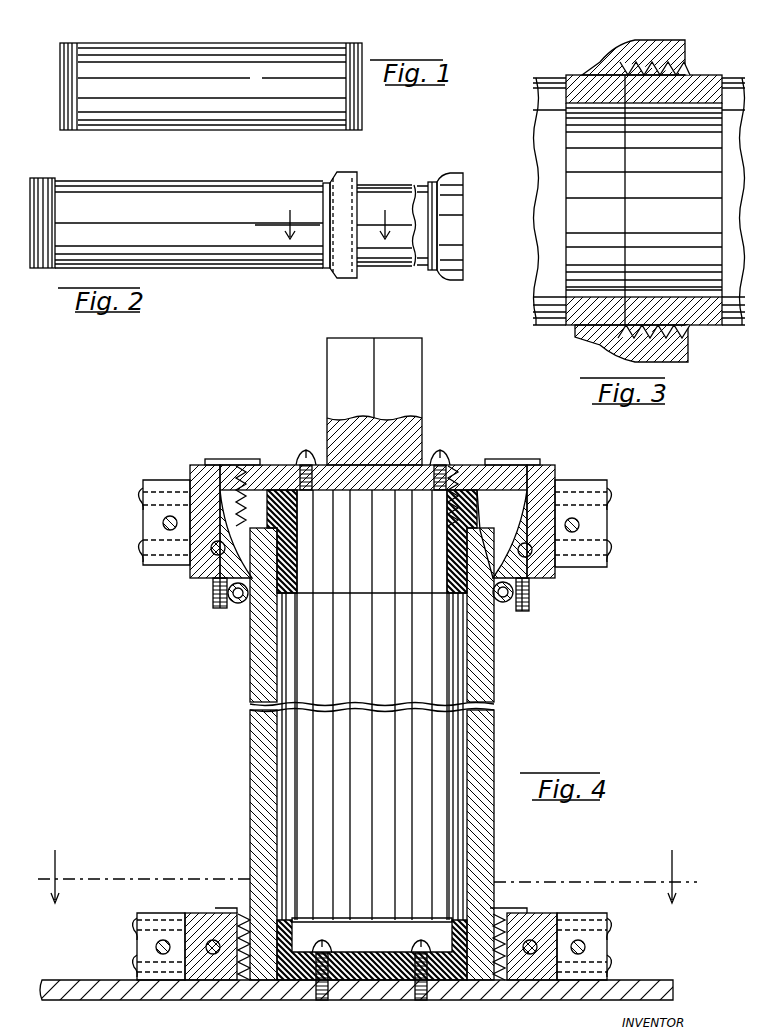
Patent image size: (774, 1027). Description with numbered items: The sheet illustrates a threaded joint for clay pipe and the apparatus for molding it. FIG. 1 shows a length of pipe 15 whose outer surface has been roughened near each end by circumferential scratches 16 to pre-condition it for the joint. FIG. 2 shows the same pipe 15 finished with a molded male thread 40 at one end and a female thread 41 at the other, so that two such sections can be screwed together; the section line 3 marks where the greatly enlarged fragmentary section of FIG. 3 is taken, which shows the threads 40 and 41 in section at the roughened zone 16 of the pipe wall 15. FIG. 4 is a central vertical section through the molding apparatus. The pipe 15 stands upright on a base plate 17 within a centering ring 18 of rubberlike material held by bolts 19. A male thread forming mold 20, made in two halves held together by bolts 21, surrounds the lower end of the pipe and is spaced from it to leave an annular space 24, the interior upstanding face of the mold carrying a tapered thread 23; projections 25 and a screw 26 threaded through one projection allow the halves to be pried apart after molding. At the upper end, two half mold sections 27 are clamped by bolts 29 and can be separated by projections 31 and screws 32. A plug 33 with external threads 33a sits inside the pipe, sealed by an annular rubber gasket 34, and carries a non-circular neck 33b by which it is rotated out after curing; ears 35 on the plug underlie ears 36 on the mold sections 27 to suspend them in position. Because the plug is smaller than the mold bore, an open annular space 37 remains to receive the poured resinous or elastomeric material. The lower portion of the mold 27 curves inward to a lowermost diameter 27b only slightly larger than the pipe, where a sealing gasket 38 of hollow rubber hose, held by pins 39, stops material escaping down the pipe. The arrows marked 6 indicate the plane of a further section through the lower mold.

In FIG. 1, the pipe 15 is at (239, 46).
In FIG. 2, the pipe 15 is at (192, 186).
In FIG. 3, the pipe 15 is at (533, 133).
In FIG. 4, the pipe 15 is at (250, 679).
In FIG. 1, the roughened surface 16 is at (66, 46).
In FIG. 3, the roughened surface 16 is at (670, 303).
In FIG. 2, the male thread 40 is at (42, 178).
In FIG. 3, the male thread 40 is at (690, 66).
In FIG. 2, the female thread 41 is at (347, 176).
In FIG. 3, the female thread 41 is at (615, 56).
In FIG. 2, the section line 3 is at (333, 234).
In FIG. 4, the non-circular neck 33b is at (422, 372).
In FIG. 4, the plug 33 is at (455, 470).
In FIG. 4, the external threads 33a is at (488, 468).
In FIG. 4, the half mold sections 27 is at (202, 468).
In FIG. 4, the lowermost diameter 27b is at (212, 555).
In FIG. 4, the annular space 37 is at (226, 468).
In FIG. 4, the ears 36 is at (490, 462).
In FIG. 4, the ears 35 is at (522, 460).
In FIG. 4, the annular rubber gasket 34 is at (447, 568).
In FIG. 4, the projections 31 is at (168, 482).
In FIG. 4, the screws 32 is at (162, 523).
In FIG. 4, the bolts 29 is at (532, 555).
In FIG. 4, the pins 39 is at (213, 598).
In FIG. 4, the sealing gasket 38 is at (238, 604).
In FIG. 4, the centering ring 18 is at (298, 940).
In FIG. 4, the bolts 19 is at (320, 1000).
In FIG. 4, the base plate 17 is at (126, 1000).
In FIG. 4, the male thread forming mold 20 is at (207, 915).
In FIG. 4, the bolts 21 is at (216, 938).
In FIG. 4, the annular space 24 is at (498, 915).
In FIG. 4, the projections 25 is at (160, 913).
In FIG. 4, the screw 26 is at (155, 947).
In FIG. 4, the thread 23 is at (493, 955).
In FIG. 4, the section line 6 is at (367, 894).